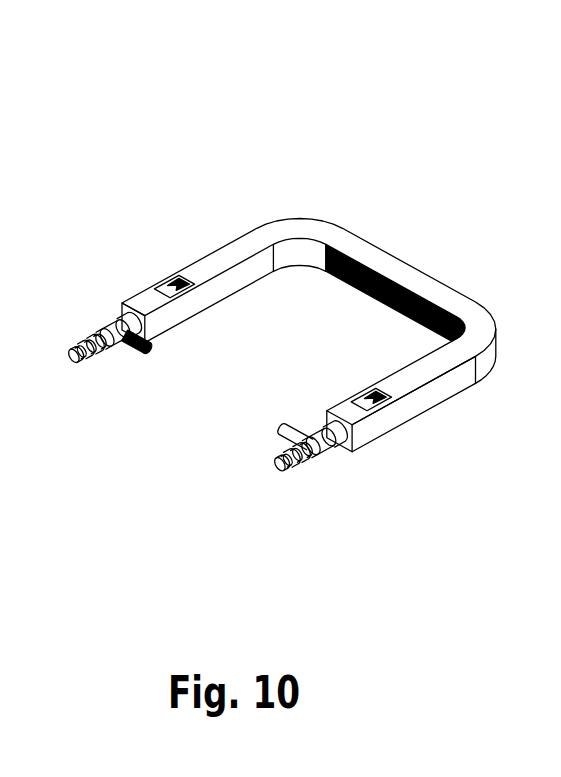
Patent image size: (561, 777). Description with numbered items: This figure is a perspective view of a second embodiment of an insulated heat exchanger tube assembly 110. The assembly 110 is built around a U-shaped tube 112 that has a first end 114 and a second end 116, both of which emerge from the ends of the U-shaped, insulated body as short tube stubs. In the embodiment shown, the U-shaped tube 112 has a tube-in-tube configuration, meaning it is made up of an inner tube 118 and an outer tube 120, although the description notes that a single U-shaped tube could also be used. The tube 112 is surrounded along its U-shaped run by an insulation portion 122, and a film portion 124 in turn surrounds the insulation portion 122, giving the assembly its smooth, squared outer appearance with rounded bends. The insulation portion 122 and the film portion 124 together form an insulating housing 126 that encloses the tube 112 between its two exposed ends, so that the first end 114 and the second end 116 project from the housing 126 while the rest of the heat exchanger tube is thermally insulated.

The insulated heat exchanger tube assembly 110 is at (435, 221).
The U-shaped tube 112 is at (337, 465).
The first end 114 is at (290, 477).
The second end 116 is at (87, 361).
The inner tube 118 is at (72, 358).
The outer tube 120 is at (122, 316).
The insulation portion 122 is at (327, 418).
The film portion 124 is at (422, 417).
The insulating housing 126 is at (483, 391).